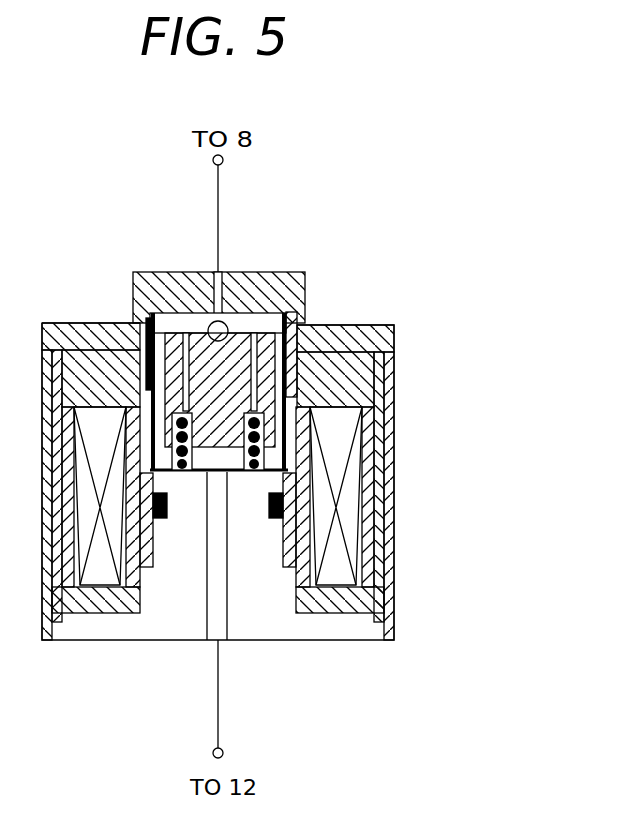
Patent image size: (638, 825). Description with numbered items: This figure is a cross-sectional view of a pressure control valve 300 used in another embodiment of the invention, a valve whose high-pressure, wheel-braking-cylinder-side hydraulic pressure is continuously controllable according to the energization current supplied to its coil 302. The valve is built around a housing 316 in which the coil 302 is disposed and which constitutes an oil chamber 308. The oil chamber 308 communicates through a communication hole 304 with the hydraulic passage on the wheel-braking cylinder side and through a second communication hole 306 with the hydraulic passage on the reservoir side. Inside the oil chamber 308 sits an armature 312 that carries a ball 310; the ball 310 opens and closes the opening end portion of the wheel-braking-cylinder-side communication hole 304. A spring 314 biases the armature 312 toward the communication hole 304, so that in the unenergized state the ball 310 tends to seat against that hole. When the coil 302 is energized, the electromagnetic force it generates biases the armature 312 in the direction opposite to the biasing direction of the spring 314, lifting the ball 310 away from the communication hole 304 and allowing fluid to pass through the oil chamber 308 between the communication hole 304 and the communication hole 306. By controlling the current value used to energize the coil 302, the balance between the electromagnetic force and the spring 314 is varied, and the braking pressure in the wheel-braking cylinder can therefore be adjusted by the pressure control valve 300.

The pressure control valve 300 is at (377, 230).
The coil 302 is at (335, 563).
The communication hole 304 is at (192, 272).
The communication hole 306 is at (218, 608).
The oil chamber 308 is at (303, 322).
The ball 310 is at (227, 323).
The armature 312 is at (268, 373).
The spring 314 is at (310, 442).
The housing 316 is at (383, 509).